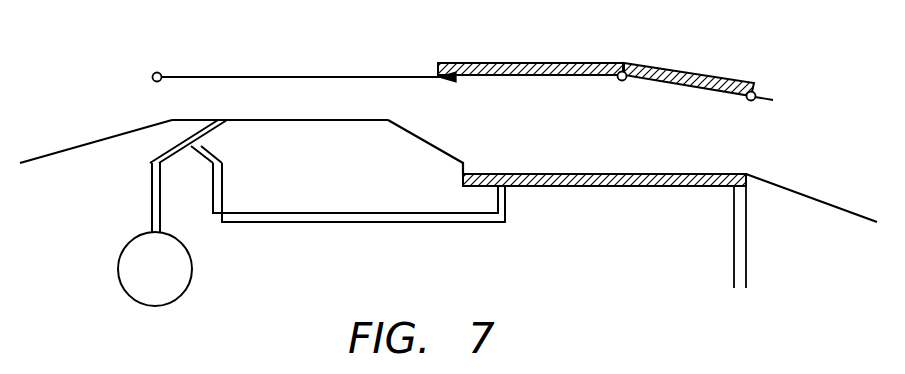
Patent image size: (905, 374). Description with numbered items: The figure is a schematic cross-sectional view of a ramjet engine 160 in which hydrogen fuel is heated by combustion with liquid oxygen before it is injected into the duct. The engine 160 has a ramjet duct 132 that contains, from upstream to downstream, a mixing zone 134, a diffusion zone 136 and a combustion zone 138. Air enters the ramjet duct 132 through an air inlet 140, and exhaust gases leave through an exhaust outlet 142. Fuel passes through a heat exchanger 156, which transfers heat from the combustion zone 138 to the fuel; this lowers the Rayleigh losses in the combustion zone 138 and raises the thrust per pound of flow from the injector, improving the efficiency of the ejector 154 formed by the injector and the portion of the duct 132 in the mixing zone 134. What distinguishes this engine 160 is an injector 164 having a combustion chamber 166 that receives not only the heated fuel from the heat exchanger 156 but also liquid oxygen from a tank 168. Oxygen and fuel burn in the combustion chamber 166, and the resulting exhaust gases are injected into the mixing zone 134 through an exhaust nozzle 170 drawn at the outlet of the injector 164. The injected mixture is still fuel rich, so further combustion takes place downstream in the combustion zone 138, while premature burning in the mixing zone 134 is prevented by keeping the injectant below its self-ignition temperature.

The ramjet duct 132 is at (282, 82).
The mixing zone 134 is at (340, 105).
The diffusion zone 136 is at (486, 134).
The combustion zone 138 is at (604, 142).
The air inlet 140 is at (180, 96).
The exhaust outlet 142 is at (812, 153).
The ejector 154 is at (235, 103).
The heat exchanger 156 is at (638, 187).
The engine 160 is at (548, 63).
The injector 164 is at (189, 149).
The combustion chamber 166 is at (178, 143).
The tank 168 is at (174, 291).
The inlet tube 170 is at (219, 129).